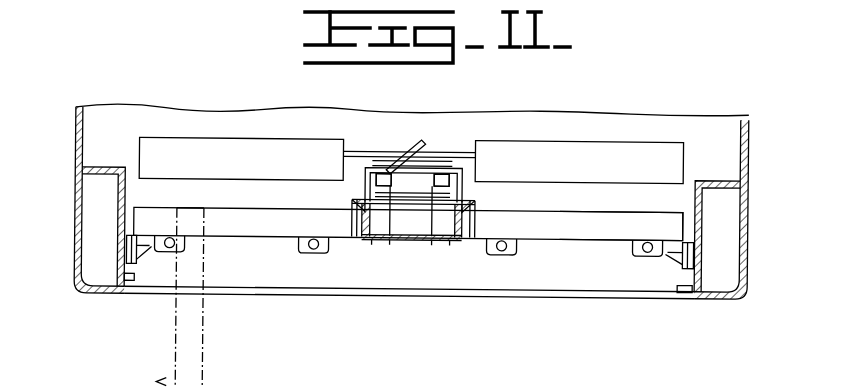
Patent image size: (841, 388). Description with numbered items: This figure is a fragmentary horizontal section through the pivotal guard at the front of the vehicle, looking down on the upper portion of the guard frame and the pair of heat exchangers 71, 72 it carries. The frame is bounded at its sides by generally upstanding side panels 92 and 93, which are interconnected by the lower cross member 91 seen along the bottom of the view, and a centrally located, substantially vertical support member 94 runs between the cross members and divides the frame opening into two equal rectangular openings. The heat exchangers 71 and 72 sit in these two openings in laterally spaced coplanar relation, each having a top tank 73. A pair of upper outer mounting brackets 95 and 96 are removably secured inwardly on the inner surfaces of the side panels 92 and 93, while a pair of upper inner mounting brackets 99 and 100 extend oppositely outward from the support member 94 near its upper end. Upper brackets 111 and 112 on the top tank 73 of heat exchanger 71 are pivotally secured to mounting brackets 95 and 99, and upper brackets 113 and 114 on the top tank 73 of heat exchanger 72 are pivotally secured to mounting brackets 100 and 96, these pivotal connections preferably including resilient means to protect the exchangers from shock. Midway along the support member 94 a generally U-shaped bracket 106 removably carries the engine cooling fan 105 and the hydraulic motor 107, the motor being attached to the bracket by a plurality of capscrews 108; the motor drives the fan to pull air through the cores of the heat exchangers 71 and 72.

The heat exchanger 71 is at (232, 238).
The heat exchanger 72 is at (547, 234).
The top tank 73 is at (218, 214).
The lower cross member 91 is at (420, 298).
The side panel 92 is at (76, 222).
The side panel 93 is at (750, 262).
The support member 94 is at (408, 242).
The upper outer mounting bracket 95 is at (150, 249).
The upper outer mounting bracket 96 is at (680, 258).
The upper inner mounting bracket 99 is at (350, 248).
The upper inner mounting bracket 100 is at (455, 244).
The engine cooling fan 105 is at (543, 158).
The U-shaped bracket 106 is at (445, 166).
The hydraulic motor 107 is at (422, 218).
The capscrew 108 is at (363, 182).
The upper bracket 111 is at (166, 256).
The upper bracket 112 is at (316, 256).
The upper bracket 113 is at (506, 256).
The upper bracket 114 is at (636, 252).